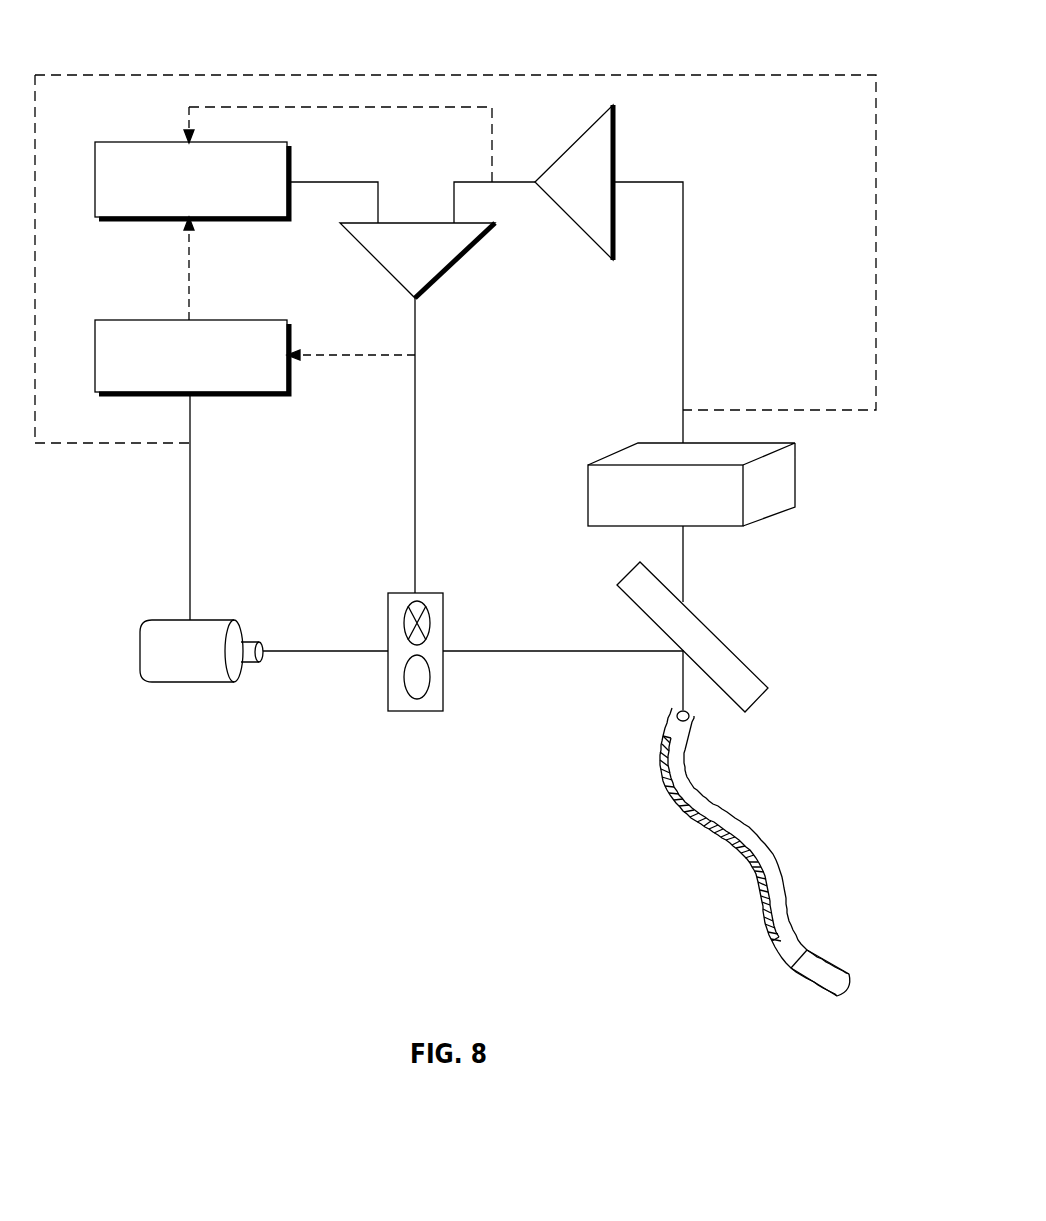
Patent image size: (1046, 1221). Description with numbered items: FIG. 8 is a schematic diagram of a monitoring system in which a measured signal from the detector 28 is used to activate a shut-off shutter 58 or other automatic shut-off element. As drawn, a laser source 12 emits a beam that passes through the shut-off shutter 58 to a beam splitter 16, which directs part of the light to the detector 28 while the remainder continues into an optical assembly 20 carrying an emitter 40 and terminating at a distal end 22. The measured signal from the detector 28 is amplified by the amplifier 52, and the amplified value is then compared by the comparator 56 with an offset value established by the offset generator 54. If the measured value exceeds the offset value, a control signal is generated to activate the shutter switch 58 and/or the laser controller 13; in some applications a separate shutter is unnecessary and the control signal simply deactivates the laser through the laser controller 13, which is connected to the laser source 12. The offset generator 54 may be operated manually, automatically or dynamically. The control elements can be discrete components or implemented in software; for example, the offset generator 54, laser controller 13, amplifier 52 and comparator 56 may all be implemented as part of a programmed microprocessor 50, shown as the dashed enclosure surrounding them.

The programmed microprocessor 50 is at (700, 75).
The offset generator 54 is at (95, 180).
The laser controller 13 is at (95, 355).
The comparator 56 is at (415, 223).
The amplifier 52 is at (615, 153).
The detector 28 is at (627, 445).
The beam splitter 16 is at (723, 657).
The laser source 12 is at (182, 682).
The shut-off shutter 58 is at (406, 711).
The optical assembly 20 is at (723, 797).
The emitter 40 is at (757, 897).
The distal tip 22 is at (831, 967).